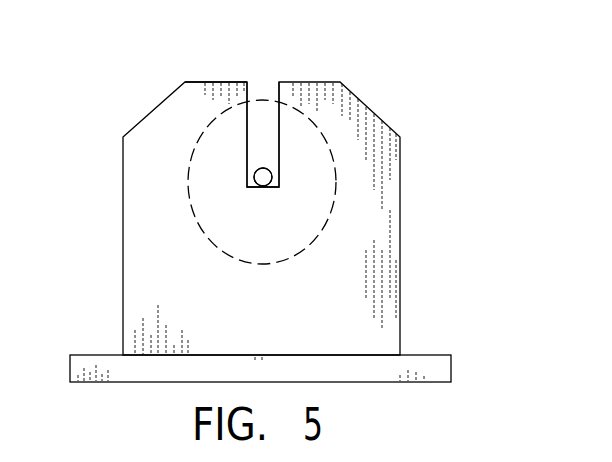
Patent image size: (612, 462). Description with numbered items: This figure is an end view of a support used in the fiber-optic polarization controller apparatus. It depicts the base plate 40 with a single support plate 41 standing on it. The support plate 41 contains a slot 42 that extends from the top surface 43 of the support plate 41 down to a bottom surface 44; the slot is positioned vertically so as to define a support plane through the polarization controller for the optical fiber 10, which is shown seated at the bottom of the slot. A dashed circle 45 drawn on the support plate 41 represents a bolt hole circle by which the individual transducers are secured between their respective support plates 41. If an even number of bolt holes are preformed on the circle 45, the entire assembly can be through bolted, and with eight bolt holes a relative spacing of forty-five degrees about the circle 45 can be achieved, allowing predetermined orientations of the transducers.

The optical fiber 10 is at (267, 171).
The base plate 40 is at (430, 355).
The support plate 41 is at (123, 258).
The slot 42 is at (279, 97).
The top surface 43 is at (202, 81).
The bottom surface 44 is at (268, 170).
The circle 45 is at (315, 240).